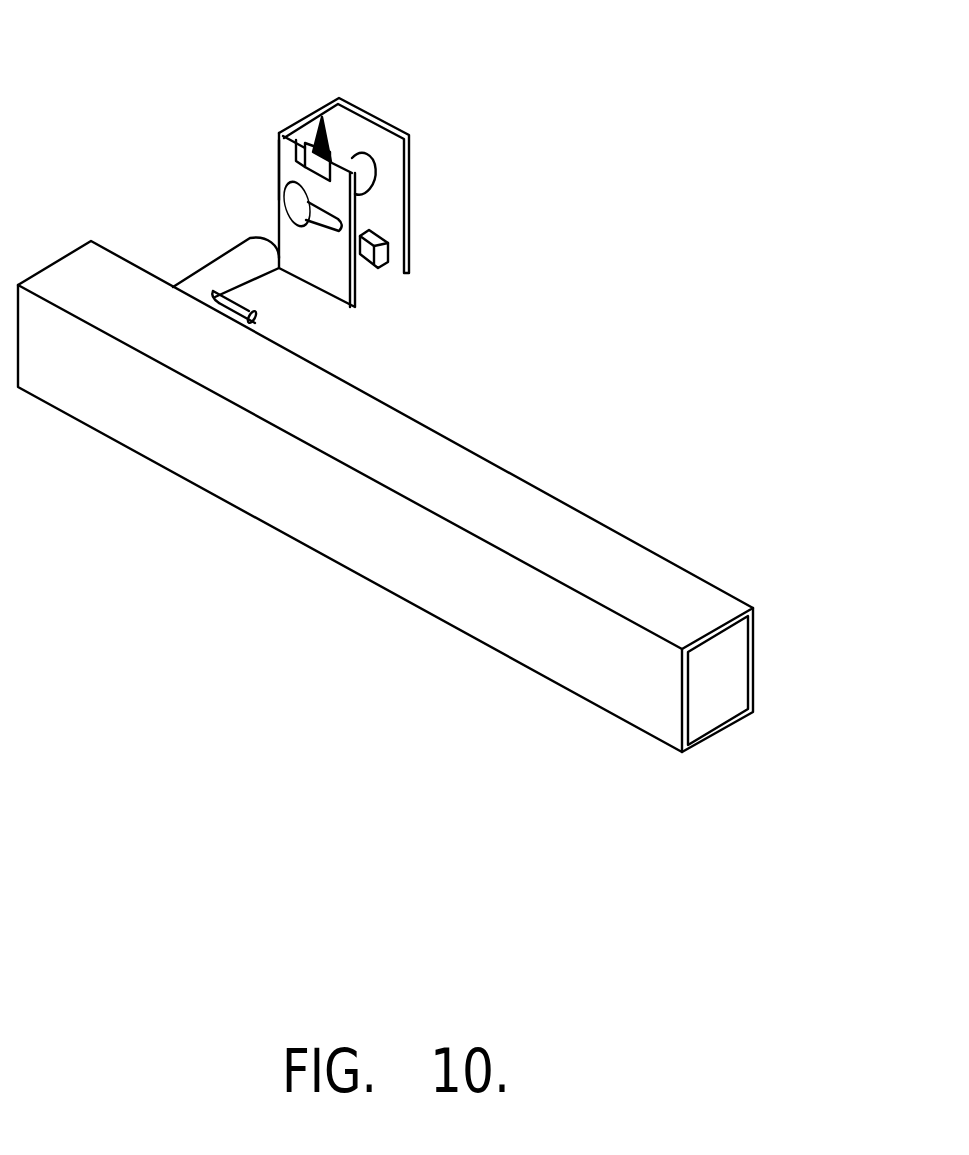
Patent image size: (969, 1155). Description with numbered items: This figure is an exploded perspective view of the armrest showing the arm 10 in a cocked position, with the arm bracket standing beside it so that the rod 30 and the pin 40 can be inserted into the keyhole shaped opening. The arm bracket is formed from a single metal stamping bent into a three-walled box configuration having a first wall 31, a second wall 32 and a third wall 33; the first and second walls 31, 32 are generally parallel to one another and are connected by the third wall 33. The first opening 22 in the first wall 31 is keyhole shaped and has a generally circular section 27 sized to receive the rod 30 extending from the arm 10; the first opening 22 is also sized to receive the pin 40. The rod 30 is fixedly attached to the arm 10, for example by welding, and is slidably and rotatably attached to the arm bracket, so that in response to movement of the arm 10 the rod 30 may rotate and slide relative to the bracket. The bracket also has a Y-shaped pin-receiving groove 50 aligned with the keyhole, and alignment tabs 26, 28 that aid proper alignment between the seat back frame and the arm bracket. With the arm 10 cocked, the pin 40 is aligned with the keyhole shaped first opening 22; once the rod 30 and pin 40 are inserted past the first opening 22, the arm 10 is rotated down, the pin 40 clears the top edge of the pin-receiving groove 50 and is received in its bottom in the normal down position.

The arm 10 is at (505, 480).
The first opening 22 is at (322, 224).
The alignment tab 26 is at (296, 142).
The generally circular section 27 is at (289, 204).
The alignment tab 28 is at (378, 266).
The rod 30 is at (212, 265).
The first wall 31 is at (281, 155).
The second wall 32 is at (390, 150).
The third wall 33 is at (323, 117).
The pin 40 is at (255, 320).
The pin-receiving groove 50 is at (338, 152).